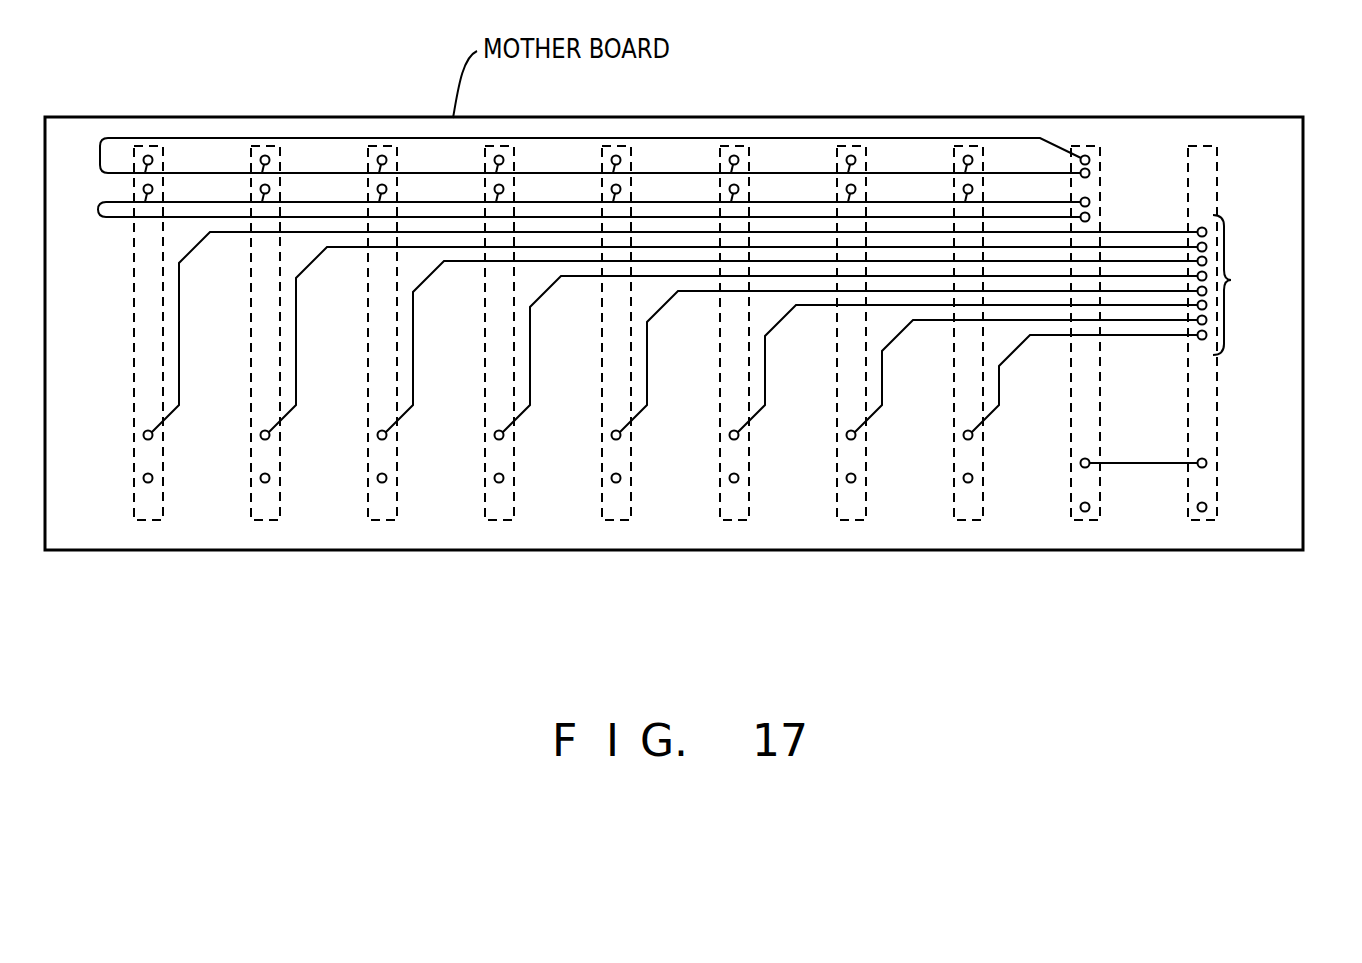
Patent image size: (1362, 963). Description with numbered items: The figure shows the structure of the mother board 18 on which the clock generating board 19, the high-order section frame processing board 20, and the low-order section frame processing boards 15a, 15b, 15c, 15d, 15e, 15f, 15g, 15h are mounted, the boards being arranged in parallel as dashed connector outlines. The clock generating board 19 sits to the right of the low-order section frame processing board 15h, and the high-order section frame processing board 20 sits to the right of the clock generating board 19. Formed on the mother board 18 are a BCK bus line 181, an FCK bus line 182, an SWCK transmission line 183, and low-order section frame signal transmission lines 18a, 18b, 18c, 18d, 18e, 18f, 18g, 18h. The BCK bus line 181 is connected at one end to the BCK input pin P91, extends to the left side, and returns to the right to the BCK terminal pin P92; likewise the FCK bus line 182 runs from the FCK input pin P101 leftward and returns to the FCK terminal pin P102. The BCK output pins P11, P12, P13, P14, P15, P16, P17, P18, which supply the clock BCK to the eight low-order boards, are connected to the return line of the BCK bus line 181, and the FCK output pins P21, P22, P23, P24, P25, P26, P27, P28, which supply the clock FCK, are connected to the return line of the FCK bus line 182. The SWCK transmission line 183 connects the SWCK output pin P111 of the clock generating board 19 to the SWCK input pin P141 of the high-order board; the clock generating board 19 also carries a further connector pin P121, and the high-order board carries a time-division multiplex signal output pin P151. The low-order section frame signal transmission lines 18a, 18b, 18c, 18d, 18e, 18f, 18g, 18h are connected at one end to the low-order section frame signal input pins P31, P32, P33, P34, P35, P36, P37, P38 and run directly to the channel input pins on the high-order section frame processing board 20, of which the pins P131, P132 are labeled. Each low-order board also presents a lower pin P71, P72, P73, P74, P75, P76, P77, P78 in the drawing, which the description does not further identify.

The mother board 18 is at (1304, 340).
The BCK bus line 181 is at (915, 138).
The FCK bus line 182 is at (1012, 216).
The SWCK transmission line 183 is at (1135, 462).
The low-order section frame processing board 15a is at (143, 523).
The low-order section frame processing board 15b is at (260, 523).
The low-order section frame processing board 15c is at (377, 523).
The low-order section frame processing board 15d is at (494, 523).
The low-order section frame processing board 15e is at (611, 523).
The low-order section frame processing board 15f is at (729, 523).
The low-order section frame processing board 15g is at (846, 523).
The low-order section frame processing board 15h is at (963, 523).
The clock generating board 19 is at (1080, 523).
The high-order section frame processing board 20 is at (1197, 523).
The low-order section frame signal transmission line 18a is at (224, 233).
The low-order section frame signal transmission line 18b is at (341, 248).
The low-order section frame signal transmission line 18c is at (458, 262).
The low-order section frame signal transmission line 18d is at (575, 277).
The low-order section frame signal transmission line 18e is at (692, 292).
The low-order section frame signal transmission line 18f is at (810, 306).
The low-order section frame signal transmission line 18g is at (927, 321).
The low-order section frame signal transmission line 18h is at (1044, 336).
The BCK output pin P11 is at (143, 161).
The BCK output pin P12 is at (260, 161).
The BCK output pin P13 is at (377, 161).
The BCK output pin P14 is at (494, 161).
The BCK output pin P15 is at (611, 161).
The BCK output pin P16 is at (729, 161).
The BCK output pin P17 is at (846, 161).
The BCK output pin P18 is at (963, 161).
The FCK output pin P21 is at (143, 189).
The FCK output pin P22 is at (260, 189).
The FCK output pin P23 is at (377, 189).
The FCK output pin P24 is at (494, 189).
The FCK output pin P25 is at (611, 189).
The FCK output pin P26 is at (729, 189).
The FCK output pin P27 is at (846, 189).
The FCK output pin P28 is at (963, 189).
The low-order section frame signal input pin P31 is at (143, 436).
The low-order section frame signal input pin P32 is at (260, 436).
The low-order section frame signal input pin P33 is at (377, 436).
The low-order section frame signal input pin P34 is at (494, 436).
The low-order section frame signal input pin P35 is at (611, 436).
The low-order section frame signal input pin P36 is at (729, 436).
The low-order section frame signal input pin P37 is at (846, 436).
The low-order section frame signal input pin P38 is at (963, 436).
The pin P71 is at (143, 479).
The pin P72 is at (260, 479).
The pin P73 is at (377, 479).
The pin P74 is at (494, 479).
The pin P75 is at (611, 479).
The pin P76 is at (729, 479).
The pin P77 is at (846, 479).
The pin P78 is at (963, 479).
The BCK input pin P91 is at (1089, 157).
The BCK terminal pin P92 is at (1089, 172).
The FCK input pin P101 is at (1089, 216).
The FCK terminal pin P102 is at (1089, 200).
The SWCK output pin P111 is at (1080, 463).
The connector pin P121 is at (1080, 507).
The low-order section frame signal input pin P131 is at (1258, 247).
The low-order section frame signal input pin P132 is at (1260, 278).
The SWCK input pin P141 is at (1206, 460).
The time-division multiplex signal output pin P151 is at (1206, 507).